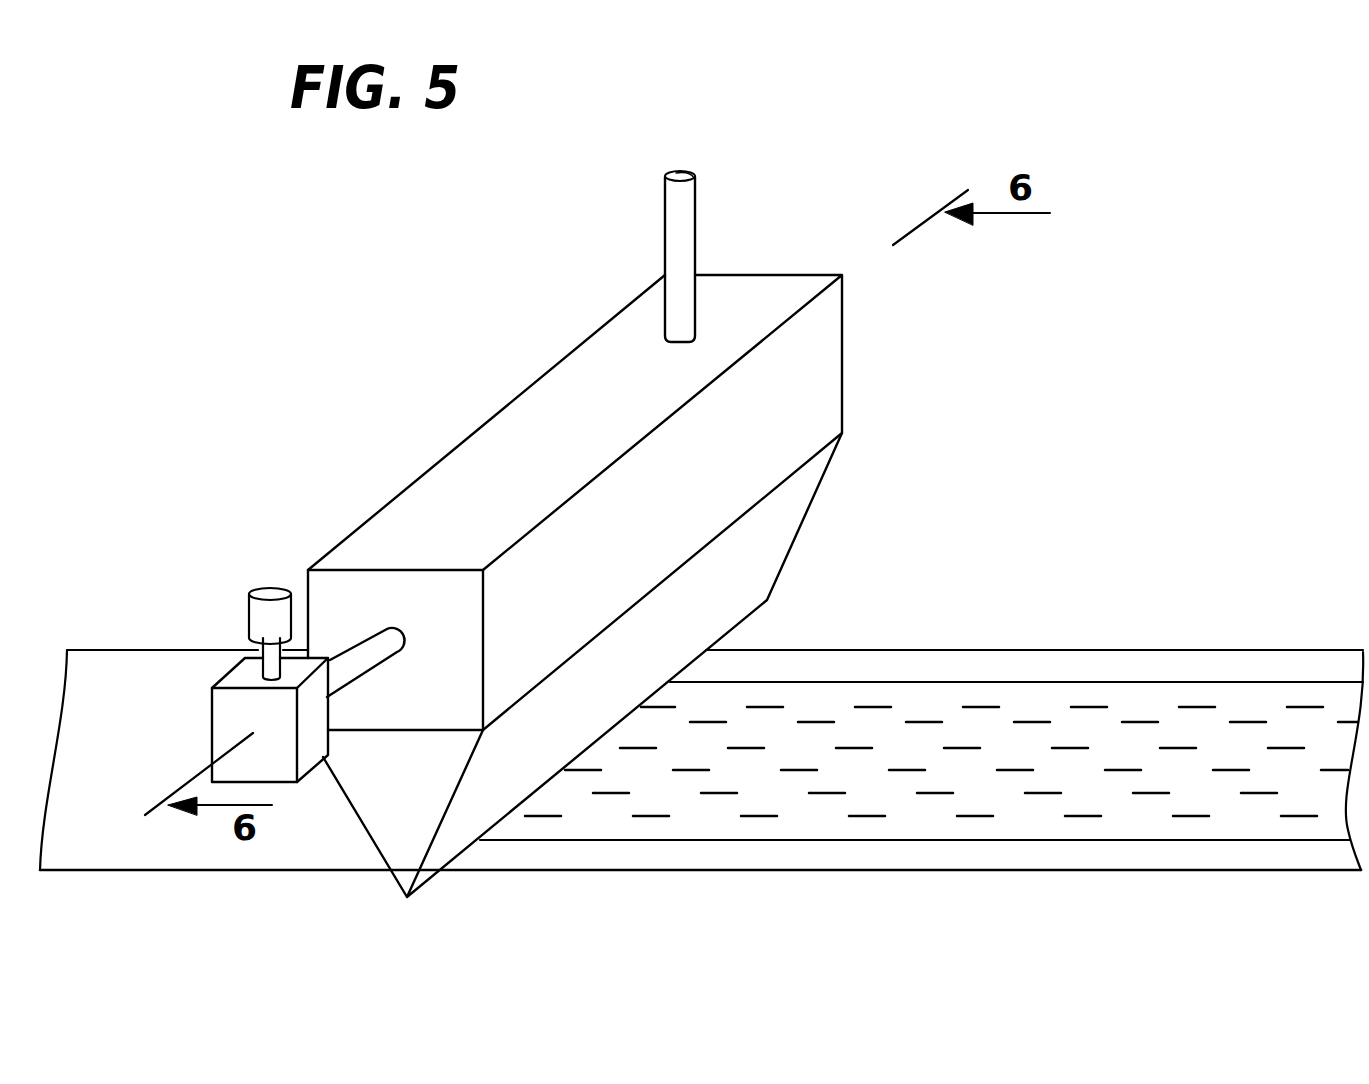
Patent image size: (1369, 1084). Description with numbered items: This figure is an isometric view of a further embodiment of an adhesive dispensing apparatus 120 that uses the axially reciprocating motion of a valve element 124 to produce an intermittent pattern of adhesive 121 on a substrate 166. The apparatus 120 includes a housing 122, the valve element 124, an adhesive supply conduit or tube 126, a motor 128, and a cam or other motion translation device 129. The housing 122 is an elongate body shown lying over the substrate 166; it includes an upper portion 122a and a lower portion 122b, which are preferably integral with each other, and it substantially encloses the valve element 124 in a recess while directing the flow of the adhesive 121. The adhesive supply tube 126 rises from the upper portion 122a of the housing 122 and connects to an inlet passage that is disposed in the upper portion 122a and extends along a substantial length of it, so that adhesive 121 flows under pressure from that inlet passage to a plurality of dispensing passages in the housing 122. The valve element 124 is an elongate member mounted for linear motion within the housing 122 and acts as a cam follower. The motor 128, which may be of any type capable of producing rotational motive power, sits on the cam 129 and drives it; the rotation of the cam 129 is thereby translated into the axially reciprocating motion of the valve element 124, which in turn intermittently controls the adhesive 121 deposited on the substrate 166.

The apparatus 120 is at (400, 393).
The adhesive 121 is at (1132, 722).
The housing 122 is at (635, 553).
The upper portion 122a is at (822, 403).
The lower portion 122b is at (778, 555).
The valve element 124 is at (350, 660).
The adhesive supply tube 126 is at (687, 249).
The motor 128 is at (262, 618).
The cam 129 is at (218, 707).
The substrate 166 is at (318, 843).